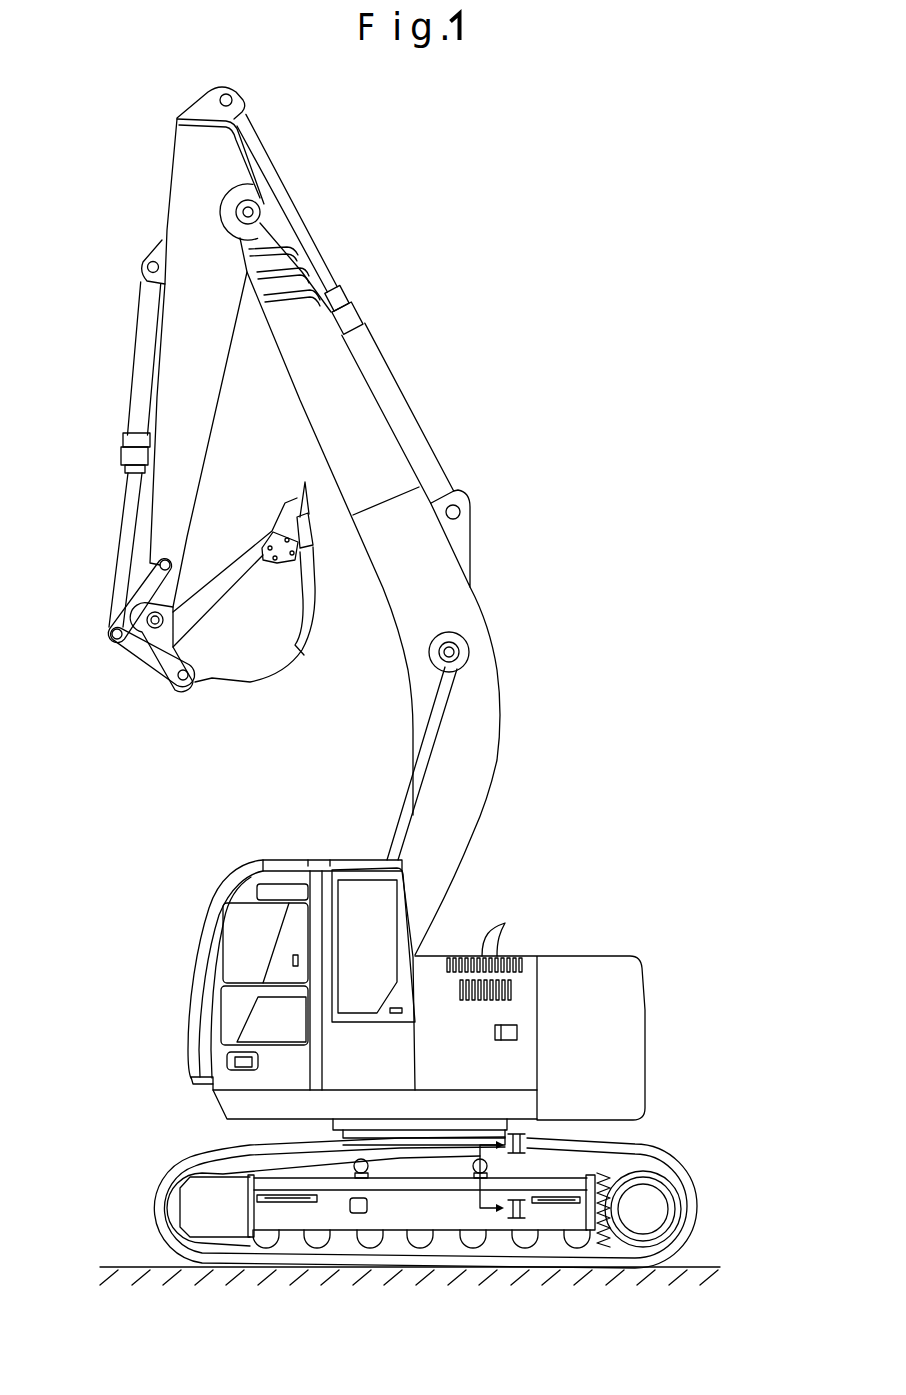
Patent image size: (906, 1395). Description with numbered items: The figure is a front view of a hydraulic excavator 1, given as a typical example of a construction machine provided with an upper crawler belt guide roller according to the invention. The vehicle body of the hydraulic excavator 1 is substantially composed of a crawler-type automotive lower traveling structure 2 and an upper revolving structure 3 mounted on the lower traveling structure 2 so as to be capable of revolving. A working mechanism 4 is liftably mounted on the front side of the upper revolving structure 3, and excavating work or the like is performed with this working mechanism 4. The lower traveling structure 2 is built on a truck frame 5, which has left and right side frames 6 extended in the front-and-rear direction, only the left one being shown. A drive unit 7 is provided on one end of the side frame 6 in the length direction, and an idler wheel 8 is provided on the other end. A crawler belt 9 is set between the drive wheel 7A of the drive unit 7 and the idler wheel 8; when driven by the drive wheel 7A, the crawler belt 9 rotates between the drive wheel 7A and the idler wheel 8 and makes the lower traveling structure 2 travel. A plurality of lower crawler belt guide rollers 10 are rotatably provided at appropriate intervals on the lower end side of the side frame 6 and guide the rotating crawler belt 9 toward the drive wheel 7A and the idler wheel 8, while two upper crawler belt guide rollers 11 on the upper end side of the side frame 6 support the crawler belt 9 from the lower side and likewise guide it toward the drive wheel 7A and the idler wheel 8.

The hydraulic excavator 1 is at (516, 403).
The lower traveling structure 2 is at (145, 1165).
The upper revolving structure 3 is at (586, 946).
The working mechanism 4 is at (480, 706).
The truck frame 5 is at (555, 1172).
The side frame 6 is at (418, 1213).
The drive unit 7 is at (644, 1208).
The drive wheel 7A is at (677, 1210).
The idler wheel 8 is at (170, 1216).
The crawler belt 9 is at (183, 1161).
The lower crawler belt guide roller 10 is at (262, 1248).
The upper crawler belt guide roller 11 is at (362, 1176).